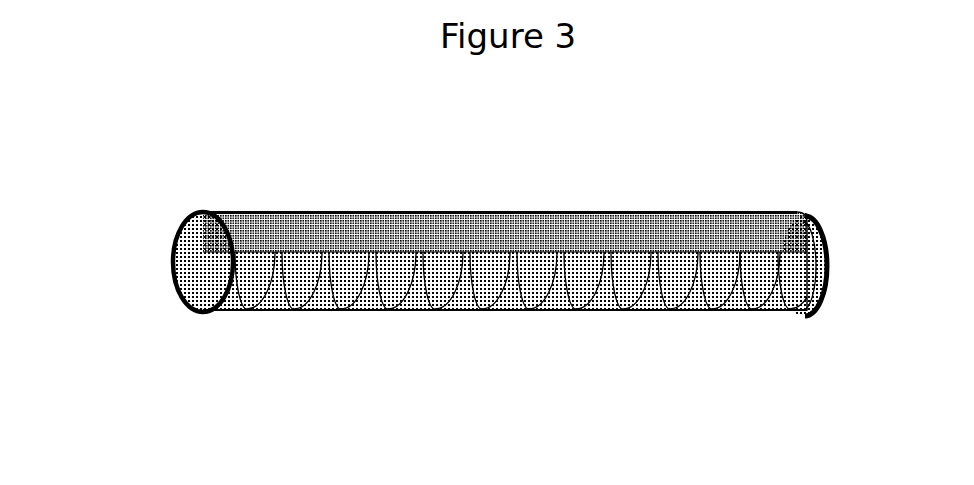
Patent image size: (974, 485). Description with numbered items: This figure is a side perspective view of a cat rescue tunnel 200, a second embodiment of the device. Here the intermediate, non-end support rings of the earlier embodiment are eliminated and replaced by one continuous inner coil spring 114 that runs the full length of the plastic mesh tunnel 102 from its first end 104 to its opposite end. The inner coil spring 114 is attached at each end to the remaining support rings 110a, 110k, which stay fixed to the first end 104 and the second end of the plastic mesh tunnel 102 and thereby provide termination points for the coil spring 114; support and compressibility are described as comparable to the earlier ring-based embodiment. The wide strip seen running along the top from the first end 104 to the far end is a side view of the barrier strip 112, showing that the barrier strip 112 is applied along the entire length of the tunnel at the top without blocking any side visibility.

The cat rescue tunnel 200 is at (522, 259).
The plastic mesh tunnel 102 is at (357, 313).
The first end 104 is at (175, 233).
The support ring 110a is at (205, 315).
The support ring 110k is at (820, 312).
The barrier strip 112 is at (327, 220).
The inner coil spring 114 is at (597, 297).